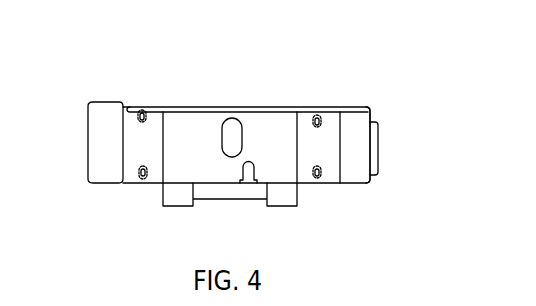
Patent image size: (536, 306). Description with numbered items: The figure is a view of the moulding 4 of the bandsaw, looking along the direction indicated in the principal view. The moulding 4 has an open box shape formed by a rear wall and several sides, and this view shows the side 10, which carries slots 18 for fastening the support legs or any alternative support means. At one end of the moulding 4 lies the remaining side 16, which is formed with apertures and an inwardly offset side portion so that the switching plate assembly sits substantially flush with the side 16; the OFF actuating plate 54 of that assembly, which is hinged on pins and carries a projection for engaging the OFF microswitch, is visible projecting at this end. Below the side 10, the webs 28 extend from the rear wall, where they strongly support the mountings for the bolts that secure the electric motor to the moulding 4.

The moulding 4 is at (203, 109).
The side 10 is at (200, 160).
The side 16 is at (371, 116).
The slots 18 is at (145, 116).
The webs 28 is at (172, 205).
The OFF actuating plate 54 is at (376, 150).